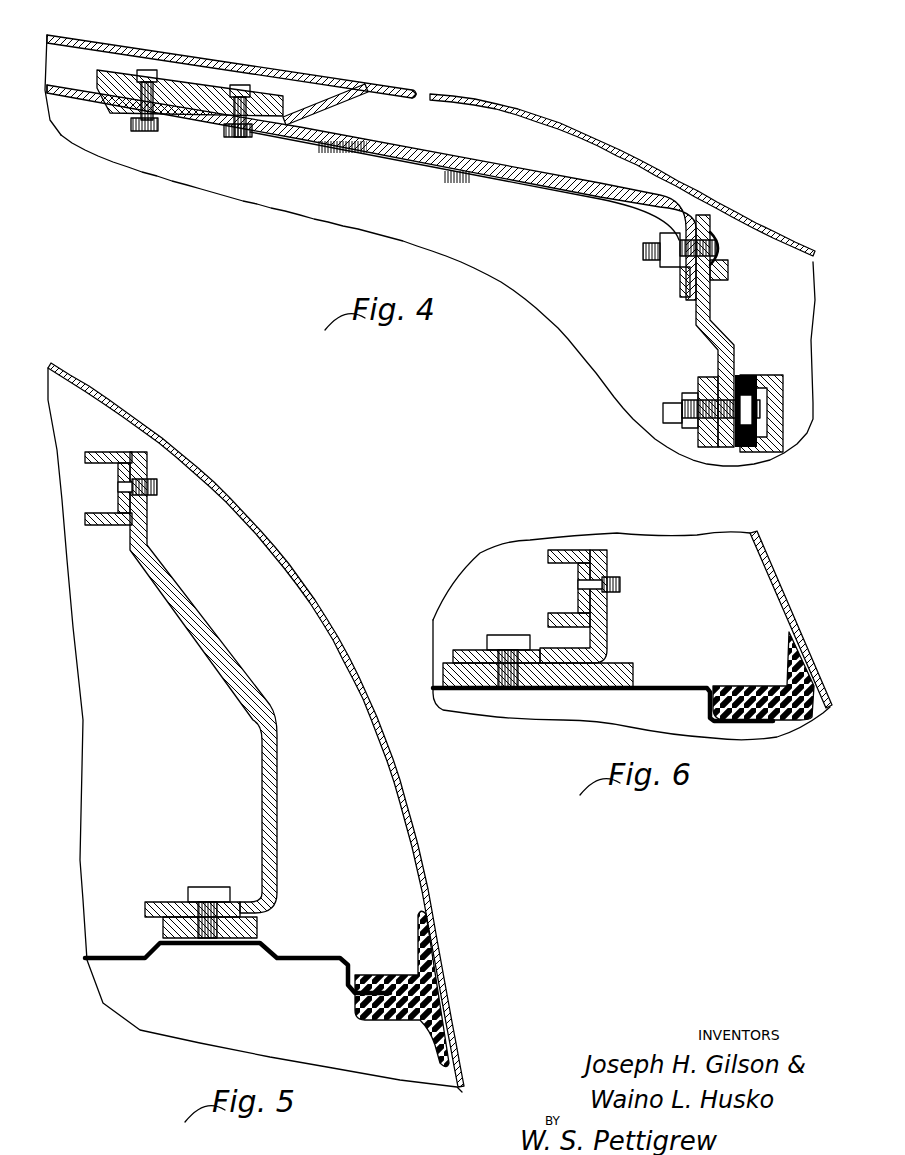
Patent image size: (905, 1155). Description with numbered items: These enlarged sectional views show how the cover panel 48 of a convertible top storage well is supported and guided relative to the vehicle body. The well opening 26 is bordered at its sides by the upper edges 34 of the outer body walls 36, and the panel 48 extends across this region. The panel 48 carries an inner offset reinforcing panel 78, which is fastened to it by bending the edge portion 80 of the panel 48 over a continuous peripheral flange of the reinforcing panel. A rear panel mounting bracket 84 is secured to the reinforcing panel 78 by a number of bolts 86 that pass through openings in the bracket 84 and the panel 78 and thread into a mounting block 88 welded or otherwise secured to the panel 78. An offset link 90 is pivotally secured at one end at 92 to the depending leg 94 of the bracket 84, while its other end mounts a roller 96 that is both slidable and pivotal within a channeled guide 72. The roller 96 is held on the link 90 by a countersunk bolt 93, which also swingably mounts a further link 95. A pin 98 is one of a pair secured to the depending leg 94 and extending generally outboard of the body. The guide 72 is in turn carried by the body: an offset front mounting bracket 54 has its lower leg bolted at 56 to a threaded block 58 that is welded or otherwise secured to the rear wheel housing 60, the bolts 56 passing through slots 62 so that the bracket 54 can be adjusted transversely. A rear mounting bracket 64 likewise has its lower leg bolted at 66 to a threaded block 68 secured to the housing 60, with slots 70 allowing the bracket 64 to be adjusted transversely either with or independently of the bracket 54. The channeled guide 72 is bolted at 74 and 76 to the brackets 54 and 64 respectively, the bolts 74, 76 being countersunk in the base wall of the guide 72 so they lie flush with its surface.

In FIG. 4, the opening 26 is at (430, 100).
In FIG. 4, the upper edges 34 is at (431, 95).
In FIG. 4, the outer body walls 36 is at (582, 132).
In FIG. 5, the outer body walls 36 is at (422, 880).
In FIG. 6, the outer body walls 36 is at (780, 585).
In FIG. 4, the panel 48 is at (292, 72).
In FIG. 5, the offset front mounting bracket 54 is at (243, 712).
In FIG. 5, the bolts 56 is at (203, 887).
In FIG. 5, the threaded block 58 is at (245, 927).
In FIG. 5, the rear wheel housing 60 is at (323, 958).
In FIG. 6, the rear wheel housing 60 is at (683, 683).
In FIG. 5, the slots 62 is at (237, 902).
In FIG. 6, the rear mounting bracket 64 is at (600, 620).
In FIG. 6, the bolts 66 is at (502, 638).
In FIG. 6, the threaded block 68 is at (633, 663).
In FIG. 6, the slots 70 is at (480, 658).
In FIG. 4, the channeled guide 72 is at (770, 380).
In FIG. 5, the channeled guide 72 is at (110, 452).
In FIG. 6, the channeled guide 72 is at (548, 557).
In FIG. 5, the bolt 74 is at (155, 495).
In FIG. 6, the bolt 76 is at (620, 583).
In FIG. 4, the inner offset reinforcing panel 78 is at (47, 92).
In FIG. 4, the edge portion 80 is at (388, 98).
In FIG. 4, the rear panel mounting bracket 84 is at (557, 185).
In FIG. 4, the bolts 86 is at (222, 131).
In FIG. 4, the mounting block 88 is at (178, 88).
In FIG. 4, the offset link 90 is at (718, 332).
In FIG. 4, the pivot 92 is at (720, 240).
In FIG. 4, the countersunk bolt 93 is at (667, 406).
In FIG. 4, the depending leg 94 is at (672, 283).
In FIG. 4, the link 95 is at (706, 385).
In FIG. 4, the roller 96 is at (745, 378).
In FIG. 4, the pin 98 is at (728, 272).